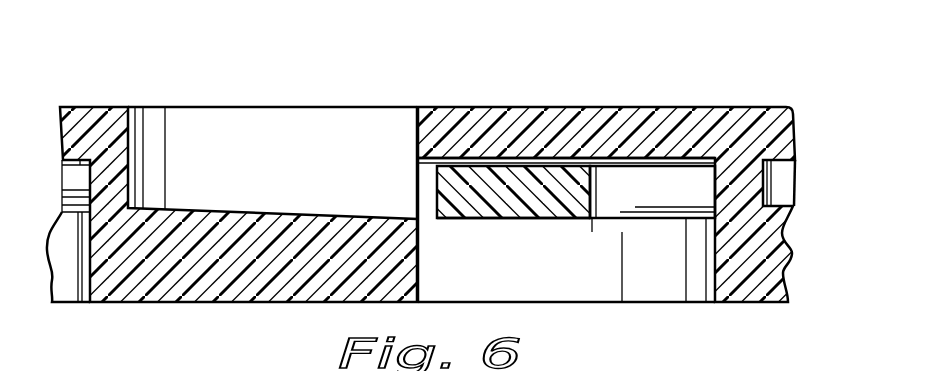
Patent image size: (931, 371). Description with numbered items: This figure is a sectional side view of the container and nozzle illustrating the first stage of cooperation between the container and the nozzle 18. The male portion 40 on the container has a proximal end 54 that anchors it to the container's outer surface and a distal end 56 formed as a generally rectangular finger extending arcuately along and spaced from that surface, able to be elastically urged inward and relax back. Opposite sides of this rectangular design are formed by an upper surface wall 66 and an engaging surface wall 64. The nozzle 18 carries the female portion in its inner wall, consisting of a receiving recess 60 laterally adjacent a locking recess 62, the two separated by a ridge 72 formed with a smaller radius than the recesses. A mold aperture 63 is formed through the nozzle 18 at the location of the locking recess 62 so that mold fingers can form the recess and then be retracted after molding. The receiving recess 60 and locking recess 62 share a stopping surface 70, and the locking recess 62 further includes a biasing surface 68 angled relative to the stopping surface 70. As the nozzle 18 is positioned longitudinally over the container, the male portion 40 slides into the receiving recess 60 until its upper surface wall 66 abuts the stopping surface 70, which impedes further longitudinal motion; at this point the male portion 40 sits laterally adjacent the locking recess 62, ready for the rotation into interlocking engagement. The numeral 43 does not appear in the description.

The nozzle 18 is at (650, 94).
The male portion 40 is at (461, 148).
The passage 43 is at (597, 258).
The proximal end 54 is at (487, 195).
The distal end 56 is at (642, 188).
The receiving recess 60 is at (651, 287).
The locking recess 62 is at (191, 152).
The mold aperture 63 is at (417, 135).
The engaging surface wall 64 is at (510, 220).
The upper surface wall 66 is at (570, 154).
The biasing surface 68 is at (273, 215).
The stopping surface 70 is at (525, 154).
The ridge 72 is at (417, 180).